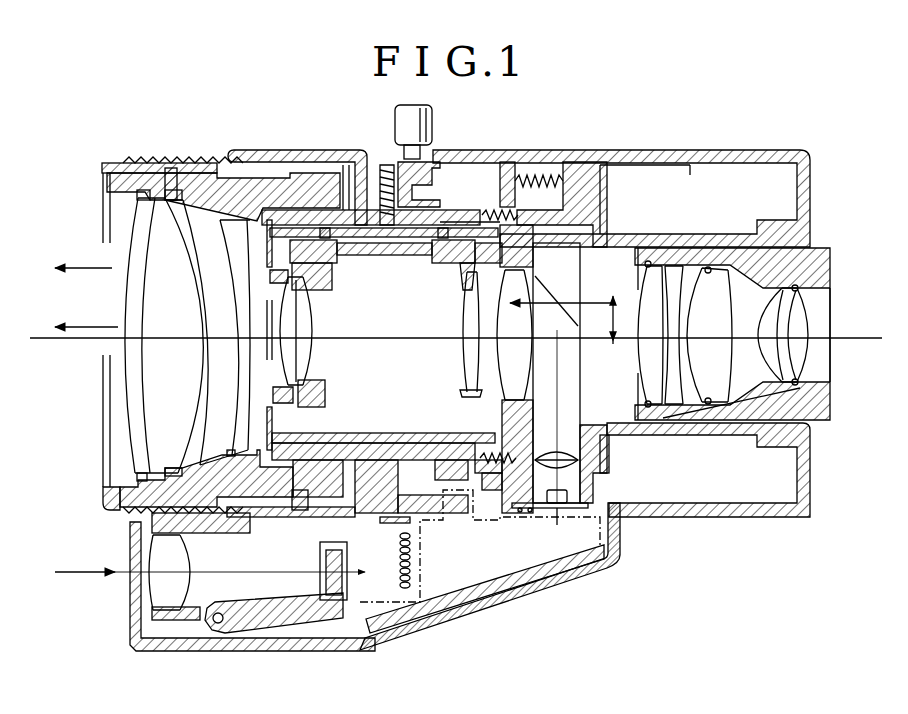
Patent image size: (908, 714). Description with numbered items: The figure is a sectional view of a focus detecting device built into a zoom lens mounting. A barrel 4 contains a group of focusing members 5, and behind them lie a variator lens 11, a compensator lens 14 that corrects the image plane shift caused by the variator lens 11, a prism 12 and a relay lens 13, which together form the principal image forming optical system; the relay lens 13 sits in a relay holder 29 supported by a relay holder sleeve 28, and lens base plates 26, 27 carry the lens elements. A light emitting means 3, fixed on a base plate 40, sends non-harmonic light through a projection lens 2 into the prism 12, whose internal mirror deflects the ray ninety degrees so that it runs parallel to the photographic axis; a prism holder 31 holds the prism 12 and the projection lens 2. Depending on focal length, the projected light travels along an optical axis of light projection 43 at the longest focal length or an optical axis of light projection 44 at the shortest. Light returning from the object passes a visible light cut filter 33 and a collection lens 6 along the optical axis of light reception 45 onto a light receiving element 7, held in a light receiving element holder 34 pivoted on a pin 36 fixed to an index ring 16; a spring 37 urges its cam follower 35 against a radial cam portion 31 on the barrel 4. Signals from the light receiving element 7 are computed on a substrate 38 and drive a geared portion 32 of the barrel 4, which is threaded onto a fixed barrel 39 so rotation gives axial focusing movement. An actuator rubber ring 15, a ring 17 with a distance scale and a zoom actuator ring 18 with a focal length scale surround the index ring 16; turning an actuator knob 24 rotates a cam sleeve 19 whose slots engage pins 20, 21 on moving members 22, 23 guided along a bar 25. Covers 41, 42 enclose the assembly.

The projection lens 2 is at (572, 453).
The light emitting means 3 is at (545, 456).
The barrel 4 is at (200, 185).
The group of focusing members 5 is at (233, 337).
The collection lens 6 is at (183, 553).
The light receiving element 7 is at (323, 562).
The variator lens 11 is at (320, 343).
The prism 12 is at (572, 287).
The relay lens 13 is at (733, 437).
The compensator lens 14 is at (468, 357).
The actuator rubber ring 15 is at (160, 160).
The index ring 16 is at (292, 152).
The ring with distance scale 17 is at (108, 163).
The zoom actuator ring 18 is at (440, 170).
The cam sleeve 19 is at (425, 222).
The pin 20 is at (450, 262).
The pin 21 is at (342, 258).
The moving member 22 is at (343, 268).
The moving member 23 is at (463, 283).
The actuator knob 24 is at (397, 128).
The bar 25 is at (398, 256).
The lens base plate 26 is at (267, 243).
The lens base plate 27 is at (530, 250).
The relay holder sleeve 28 is at (612, 218).
The relay holder 29 is at (832, 268).
The radial cam portion 31 is at (505, 163).
The geared portion 32 is at (332, 480).
The visible light cut filter 33 is at (133, 583).
The light receiving element holder 34 is at (277, 607).
The cam follower 35 is at (280, 520).
The pivot pin 36 is at (222, 613).
The spring 37 is at (400, 562).
The substrate 38 is at (518, 577).
The fixed barrel 39 is at (346, 190).
The base plate 40 is at (603, 500).
The cover 41 is at (720, 152).
The cover 42 is at (697, 505).
The optical axis of light projection 43 is at (83, 255).
The optical axis of light projection 44 is at (86, 314).
The optical axis of light reception 45 is at (210, 559).